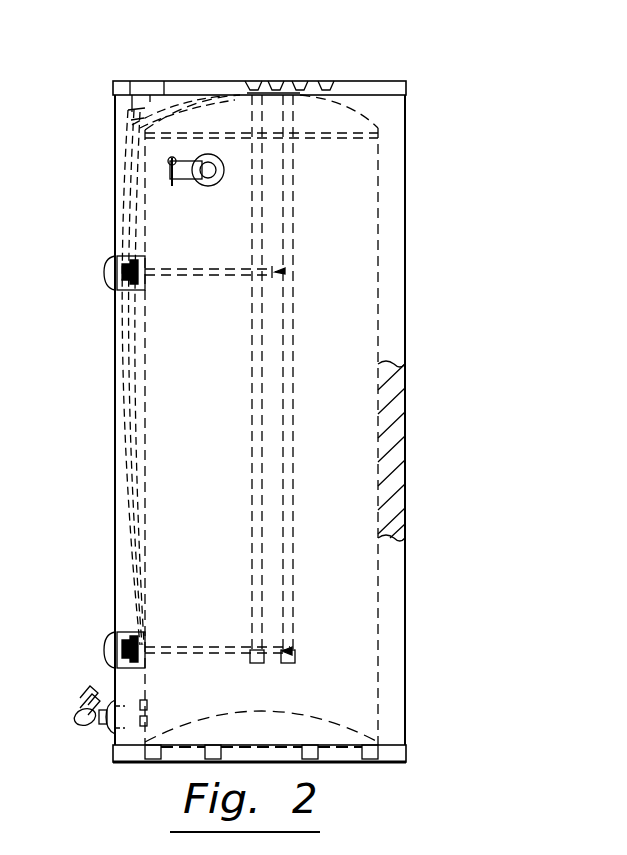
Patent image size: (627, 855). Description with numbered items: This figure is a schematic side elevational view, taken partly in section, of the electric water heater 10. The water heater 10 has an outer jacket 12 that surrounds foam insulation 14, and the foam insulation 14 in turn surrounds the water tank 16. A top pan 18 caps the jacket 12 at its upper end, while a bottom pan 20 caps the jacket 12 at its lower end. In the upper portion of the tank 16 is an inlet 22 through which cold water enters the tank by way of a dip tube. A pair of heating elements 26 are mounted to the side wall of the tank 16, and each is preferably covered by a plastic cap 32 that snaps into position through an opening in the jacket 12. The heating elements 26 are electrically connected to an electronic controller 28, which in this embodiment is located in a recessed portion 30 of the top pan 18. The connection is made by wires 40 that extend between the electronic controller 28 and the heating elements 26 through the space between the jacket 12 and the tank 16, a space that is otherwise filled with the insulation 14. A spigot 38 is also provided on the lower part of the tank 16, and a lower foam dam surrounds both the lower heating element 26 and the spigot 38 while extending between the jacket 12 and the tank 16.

The electric water heater 10 is at (448, 347).
The outer jacket 12 is at (115, 513).
The foam insulation 14 is at (390, 450).
The water tank 16 is at (388, 588).
The top pan 18 is at (362, 81).
The bottom pan 20 is at (128, 763).
The inlet 22 is at (263, 125).
The heating elements 26 is at (283, 270).
The electronic controller 28 is at (160, 100).
The recessed portion 30 is at (135, 88).
The plastic caps 32 is at (112, 270).
The spigot 38 is at (76, 722).
The wires 40 is at (118, 418).